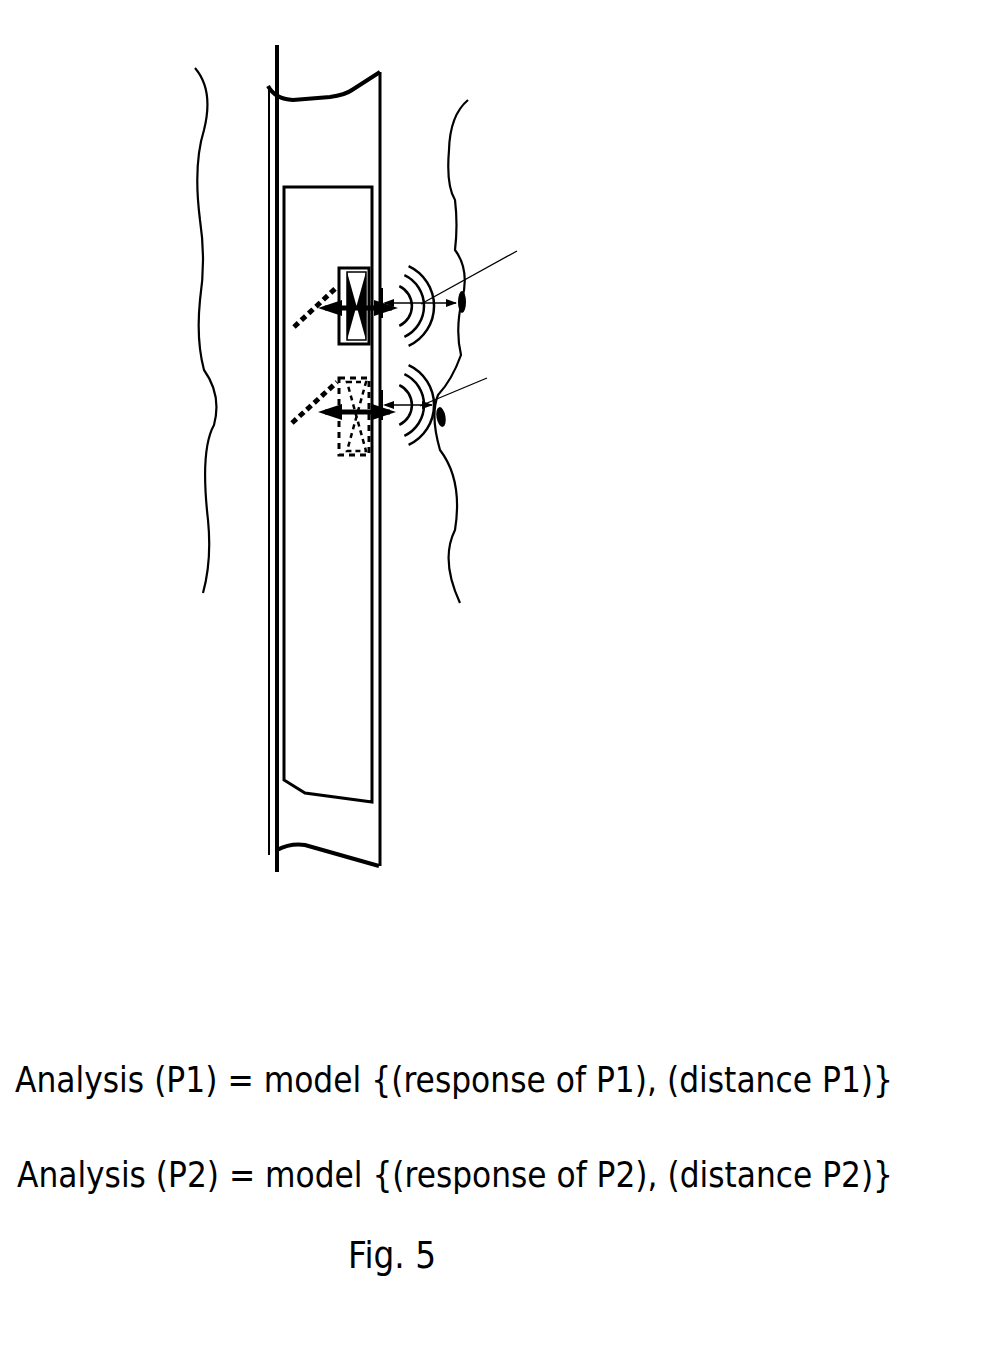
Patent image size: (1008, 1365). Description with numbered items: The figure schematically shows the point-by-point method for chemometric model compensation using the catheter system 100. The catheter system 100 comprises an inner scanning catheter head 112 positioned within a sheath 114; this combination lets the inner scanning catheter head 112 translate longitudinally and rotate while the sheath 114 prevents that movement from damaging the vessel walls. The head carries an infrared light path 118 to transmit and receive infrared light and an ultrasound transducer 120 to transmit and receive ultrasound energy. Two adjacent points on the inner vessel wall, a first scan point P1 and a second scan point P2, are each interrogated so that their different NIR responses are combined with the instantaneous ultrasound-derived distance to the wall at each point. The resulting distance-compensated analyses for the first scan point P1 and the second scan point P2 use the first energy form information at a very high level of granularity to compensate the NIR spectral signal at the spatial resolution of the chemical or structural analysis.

The catheter system 100 is at (387, 440).
The inner scanning catheter head 112 is at (327, 187).
The sheath 114 is at (382, 672).
The infrared light path 118 is at (307, 308).
The ultrasound transducer 120 is at (358, 267).
The first scan point P1 is at (464, 310).
The second scan point P2 is at (446, 420).